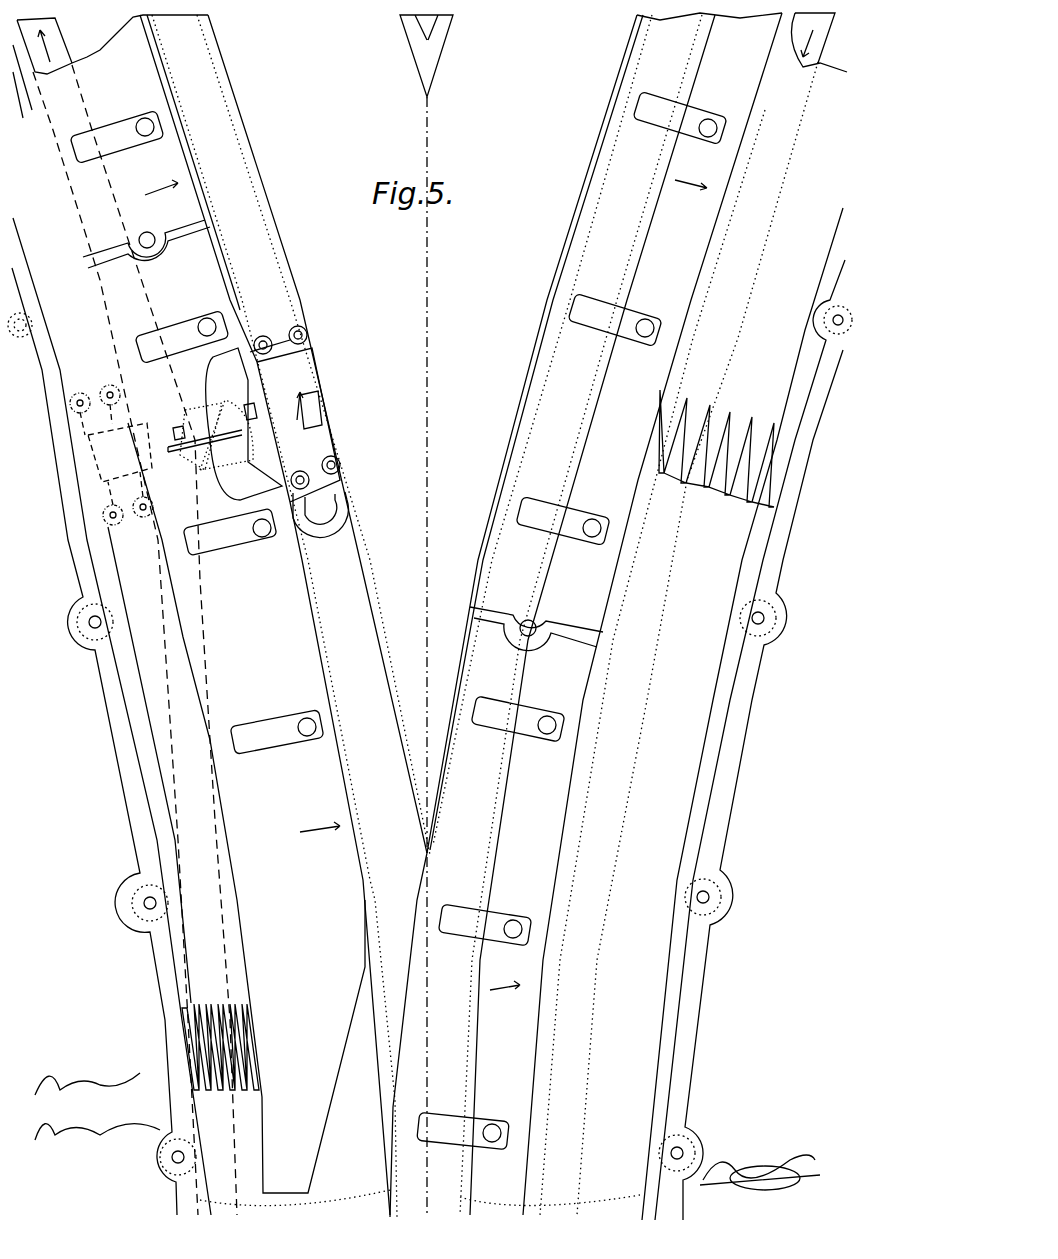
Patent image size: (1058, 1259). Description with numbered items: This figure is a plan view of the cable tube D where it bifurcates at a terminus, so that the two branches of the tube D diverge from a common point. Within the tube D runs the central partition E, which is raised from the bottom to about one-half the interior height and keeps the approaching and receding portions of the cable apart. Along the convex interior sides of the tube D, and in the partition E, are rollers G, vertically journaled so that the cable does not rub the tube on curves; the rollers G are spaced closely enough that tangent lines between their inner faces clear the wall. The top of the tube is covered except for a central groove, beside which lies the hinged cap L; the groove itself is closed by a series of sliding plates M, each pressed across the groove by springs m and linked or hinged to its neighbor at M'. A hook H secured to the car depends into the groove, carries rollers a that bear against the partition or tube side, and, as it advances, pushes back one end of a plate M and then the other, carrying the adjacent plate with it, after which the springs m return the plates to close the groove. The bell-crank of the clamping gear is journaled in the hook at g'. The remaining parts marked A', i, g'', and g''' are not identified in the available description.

The frame member A' is at (430, 59).
The central partition E is at (426, 615).
The tube D is at (428, 714).
The rollers G is at (746, 888).
The cap L is at (470, 607).
The plates M is at (425, 614).
The plate link M' is at (343, 435).
The pin i is at (492, 1130).
The rollers a is at (307, 333).
The hooks H is at (302, 442).
The bell-crank journal g' is at (193, 449).
The cam g'' is at (231, 424).
The block g''' is at (127, 455).
The springs m is at (478, 740).